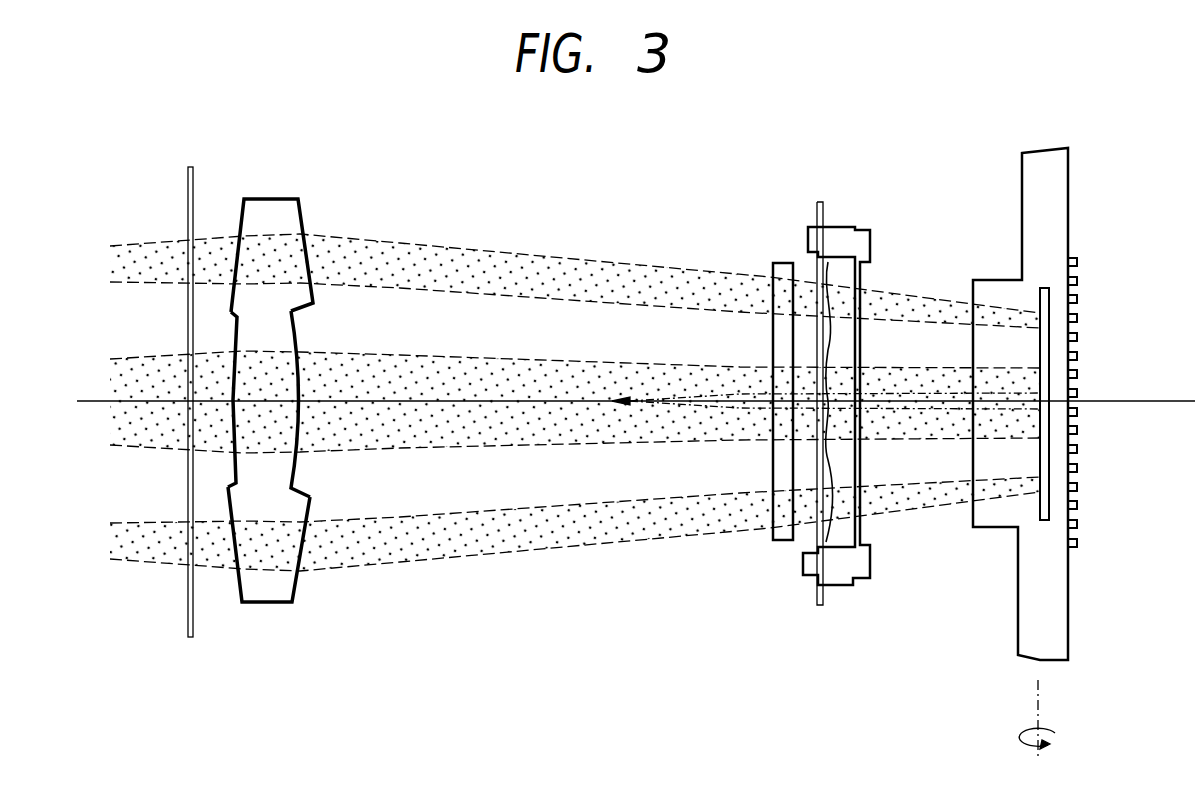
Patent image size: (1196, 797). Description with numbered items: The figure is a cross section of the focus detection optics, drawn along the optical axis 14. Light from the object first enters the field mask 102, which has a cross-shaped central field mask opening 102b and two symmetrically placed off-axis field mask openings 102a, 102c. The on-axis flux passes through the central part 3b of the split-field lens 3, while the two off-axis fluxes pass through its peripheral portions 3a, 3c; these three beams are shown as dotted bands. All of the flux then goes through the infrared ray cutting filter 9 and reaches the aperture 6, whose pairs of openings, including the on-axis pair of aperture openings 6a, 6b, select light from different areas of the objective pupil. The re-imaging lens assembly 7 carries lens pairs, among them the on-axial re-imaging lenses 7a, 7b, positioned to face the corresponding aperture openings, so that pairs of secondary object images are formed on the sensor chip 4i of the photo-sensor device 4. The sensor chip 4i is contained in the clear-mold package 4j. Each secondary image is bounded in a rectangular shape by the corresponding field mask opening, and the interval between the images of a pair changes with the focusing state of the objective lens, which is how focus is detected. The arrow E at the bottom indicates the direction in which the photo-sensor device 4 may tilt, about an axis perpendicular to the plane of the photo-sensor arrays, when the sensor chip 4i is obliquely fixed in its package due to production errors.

The split-field lens 3 is at (300, 370).
The peripheral portion of the split-field lens 3a is at (278, 553).
The central part of the split-field lens 3b is at (285, 382).
The peripheral portion of the split-field lens 3c is at (285, 255).
The photo-sensor device 4 is at (1060, 404).
The sensor chip 4i is at (1049, 312).
The clear-mold package 4j is at (1070, 220).
The aperture 6 is at (774, 379).
The aperture opening 6a is at (812, 428).
The aperture opening 6b is at (820, 380).
The re-imaging lens assembly 7 is at (862, 394).
The on-axial re-imaging lens 7a is at (837, 428).
The on-axial re-imaging lens 7b is at (843, 375).
The infrared ray cutting filter 9 is at (787, 262).
The optical axis 14 is at (1160, 401).
The field mask 102 is at (196, 165).
The field mask opening 102a is at (187, 542).
The field mask opening 102b is at (185, 425).
The field mask opening 102c is at (180, 260).
The tilt direction E is at (1048, 720).